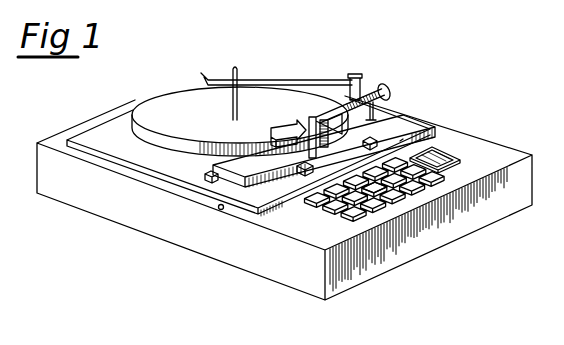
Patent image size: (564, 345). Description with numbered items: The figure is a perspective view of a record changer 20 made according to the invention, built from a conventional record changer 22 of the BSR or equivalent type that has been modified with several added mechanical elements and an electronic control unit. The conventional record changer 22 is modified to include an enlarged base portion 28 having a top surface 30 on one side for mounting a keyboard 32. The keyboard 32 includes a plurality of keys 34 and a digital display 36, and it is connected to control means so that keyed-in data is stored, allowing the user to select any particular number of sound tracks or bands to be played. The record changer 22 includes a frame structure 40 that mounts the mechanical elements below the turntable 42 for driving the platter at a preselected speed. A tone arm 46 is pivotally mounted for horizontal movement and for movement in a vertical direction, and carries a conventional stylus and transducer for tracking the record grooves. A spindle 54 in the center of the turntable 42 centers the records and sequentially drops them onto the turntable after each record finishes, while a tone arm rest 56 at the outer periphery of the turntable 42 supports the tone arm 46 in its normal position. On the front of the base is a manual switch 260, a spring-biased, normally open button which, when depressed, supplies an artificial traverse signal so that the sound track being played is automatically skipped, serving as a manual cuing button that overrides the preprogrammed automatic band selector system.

The record changer 20 is at (405, 87).
The conventional record changer 22 is at (262, 98).
The enlarged base portion 28 is at (88, 195).
The top surface 30 is at (447, 138).
The keyboard 32 is at (428, 196).
The keys 34 is at (379, 207).
The digital display 36 is at (440, 157).
The frame structure 40 is at (103, 133).
The turntable 42 is at (163, 98).
The tone arm 46 is at (338, 124).
The spindle 54 is at (235, 67).
The tone arm rest 56 is at (306, 147).
The manual switch 260 is at (220, 209).